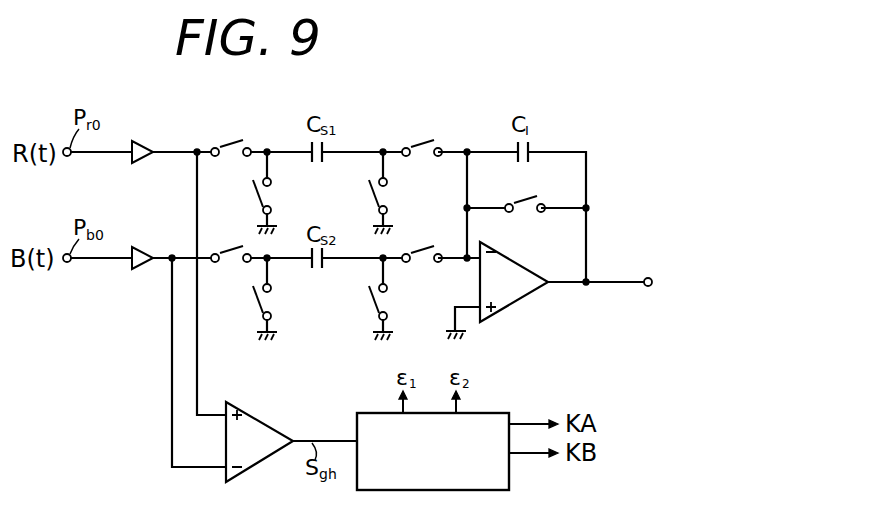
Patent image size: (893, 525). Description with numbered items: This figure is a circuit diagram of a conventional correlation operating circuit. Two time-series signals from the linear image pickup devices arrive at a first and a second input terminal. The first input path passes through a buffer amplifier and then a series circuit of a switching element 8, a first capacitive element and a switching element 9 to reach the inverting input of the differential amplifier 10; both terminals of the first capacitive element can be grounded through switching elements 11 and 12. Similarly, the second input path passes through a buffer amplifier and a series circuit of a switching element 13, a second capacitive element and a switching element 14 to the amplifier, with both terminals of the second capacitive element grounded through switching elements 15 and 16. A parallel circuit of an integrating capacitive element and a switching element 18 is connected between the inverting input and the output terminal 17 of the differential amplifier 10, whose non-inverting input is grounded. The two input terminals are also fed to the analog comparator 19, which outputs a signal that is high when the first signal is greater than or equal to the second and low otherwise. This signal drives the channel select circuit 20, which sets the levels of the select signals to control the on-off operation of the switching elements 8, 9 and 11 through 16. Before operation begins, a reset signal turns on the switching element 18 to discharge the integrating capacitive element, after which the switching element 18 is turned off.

The switching element 8 is at (226, 144).
The switching element 9 is at (419, 144).
The differential amplifier 10 is at (509, 309).
The switching element 11 is at (262, 196).
The switching element 12 is at (378, 195).
The switching element 13 is at (227, 251).
The switching element 14 is at (421, 248).
The switching element 15 is at (271, 300).
The switching element 16 is at (387, 301).
The output terminal 17 is at (652, 284).
The switching element 18 is at (513, 202).
The analog comparator 19 is at (254, 417).
The channel select circuit 20 is at (509, 480).